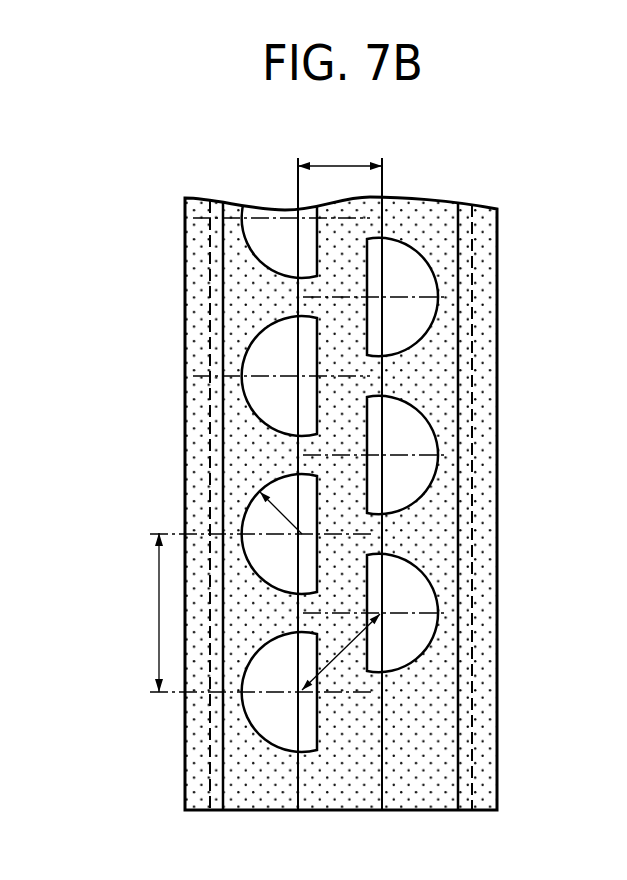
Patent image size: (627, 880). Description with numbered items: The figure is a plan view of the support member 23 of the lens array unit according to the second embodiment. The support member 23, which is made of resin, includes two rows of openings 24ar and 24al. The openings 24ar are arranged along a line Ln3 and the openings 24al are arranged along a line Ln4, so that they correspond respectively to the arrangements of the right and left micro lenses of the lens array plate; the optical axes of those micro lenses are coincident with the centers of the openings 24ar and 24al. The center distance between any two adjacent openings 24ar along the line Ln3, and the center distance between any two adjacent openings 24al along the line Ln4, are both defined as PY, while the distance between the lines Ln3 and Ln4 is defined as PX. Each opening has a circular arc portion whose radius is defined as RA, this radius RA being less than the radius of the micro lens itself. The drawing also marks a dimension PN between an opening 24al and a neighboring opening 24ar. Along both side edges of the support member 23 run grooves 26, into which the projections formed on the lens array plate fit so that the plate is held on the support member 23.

The support member 23 is at (185, 317).
The openings 24al is at (243, 392).
The openings 24ar is at (407, 276).
The grooves 26 is at (208, 748).
The line Ln4 is at (298, 192).
The line Ln3 is at (382, 182).
The distance between lines PX is at (340, 153).
The center distance PY is at (140, 612).
The radius of circular arc portion RA is at (281, 513).
The pitch between adjacent openings PN is at (340, 652).